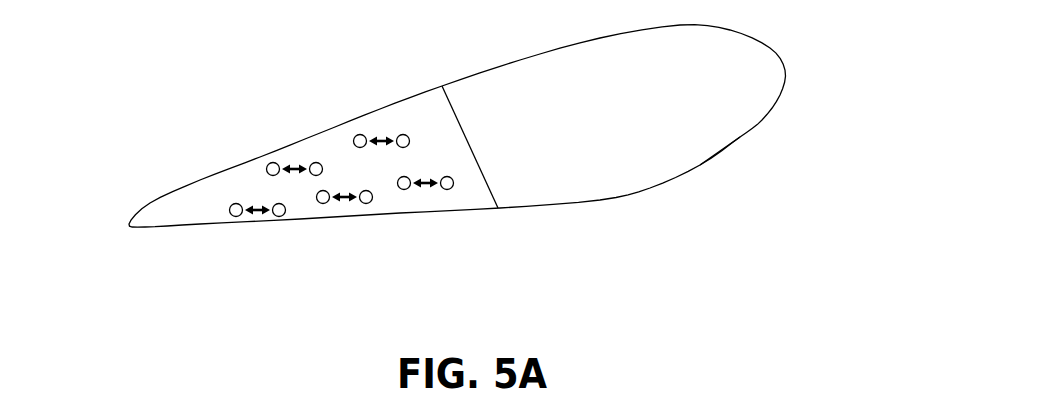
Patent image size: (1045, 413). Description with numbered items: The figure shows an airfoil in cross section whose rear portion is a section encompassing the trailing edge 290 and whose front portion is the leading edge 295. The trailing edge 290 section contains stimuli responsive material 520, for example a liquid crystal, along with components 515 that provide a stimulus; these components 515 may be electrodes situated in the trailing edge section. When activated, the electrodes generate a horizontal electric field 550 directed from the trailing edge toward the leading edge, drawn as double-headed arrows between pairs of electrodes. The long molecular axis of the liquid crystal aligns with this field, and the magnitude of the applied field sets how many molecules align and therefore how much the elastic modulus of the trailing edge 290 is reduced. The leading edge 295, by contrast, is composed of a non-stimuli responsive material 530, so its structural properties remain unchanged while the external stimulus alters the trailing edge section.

The trailing edge 290 is at (114, 228).
The leading edge 295 is at (786, 117).
The components 515 is at (325, 203).
The stimuli responsive material 520 is at (392, 207).
The non-stimuli responsive material 530 is at (541, 147).
The electric field 550 is at (380, 140).